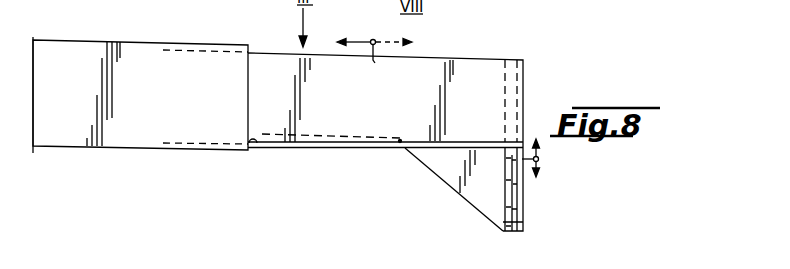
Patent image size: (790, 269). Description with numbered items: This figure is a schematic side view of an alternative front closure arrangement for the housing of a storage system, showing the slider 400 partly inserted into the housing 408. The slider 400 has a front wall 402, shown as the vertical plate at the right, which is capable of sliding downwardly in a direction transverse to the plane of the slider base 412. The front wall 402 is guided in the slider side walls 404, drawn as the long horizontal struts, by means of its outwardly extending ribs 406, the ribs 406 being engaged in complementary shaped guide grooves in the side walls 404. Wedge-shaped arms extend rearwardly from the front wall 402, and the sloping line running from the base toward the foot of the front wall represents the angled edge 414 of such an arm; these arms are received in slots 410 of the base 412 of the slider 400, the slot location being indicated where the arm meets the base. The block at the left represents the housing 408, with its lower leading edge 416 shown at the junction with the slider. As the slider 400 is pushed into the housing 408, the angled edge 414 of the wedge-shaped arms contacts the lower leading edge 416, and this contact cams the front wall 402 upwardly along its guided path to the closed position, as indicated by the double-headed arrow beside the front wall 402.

The slider 400 is at (530, 78).
The front wall 402 is at (522, 187).
The side walls 404 is at (349, 131).
The ribs 406 is at (522, 223).
The housing 408 is at (173, 105).
The slots 410 is at (400, 140).
The base 412 is at (308, 139).
The angled edge 414 is at (470, 208).
The lower leading edge 416 is at (256, 144).